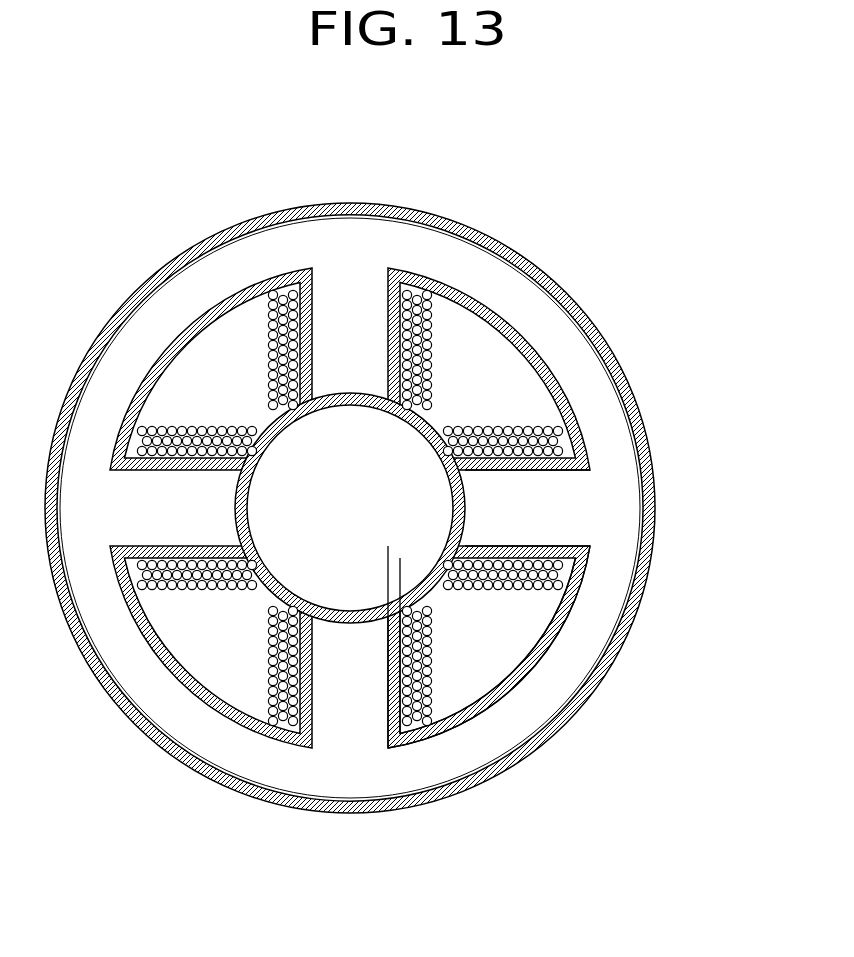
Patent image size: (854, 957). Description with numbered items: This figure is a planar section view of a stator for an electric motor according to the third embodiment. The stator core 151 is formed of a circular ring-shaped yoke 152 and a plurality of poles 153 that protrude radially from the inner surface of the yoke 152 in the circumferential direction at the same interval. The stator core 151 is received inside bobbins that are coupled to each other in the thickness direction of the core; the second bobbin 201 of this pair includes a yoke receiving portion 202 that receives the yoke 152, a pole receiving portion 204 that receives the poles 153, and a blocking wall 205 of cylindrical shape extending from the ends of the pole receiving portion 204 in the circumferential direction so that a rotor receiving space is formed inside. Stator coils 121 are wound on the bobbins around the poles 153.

The stator coil 121 is at (438, 350).
The stator core 151 is at (425, 508).
The yoke 152 is at (597, 595).
The pole 153 is at (508, 507).
The second bobbin 201 is at (350, 601).
The yoke receiving portion 202 is at (457, 727).
The pole receiving portion 204 is at (390, 681).
The blocking wall 205 is at (399, 599).